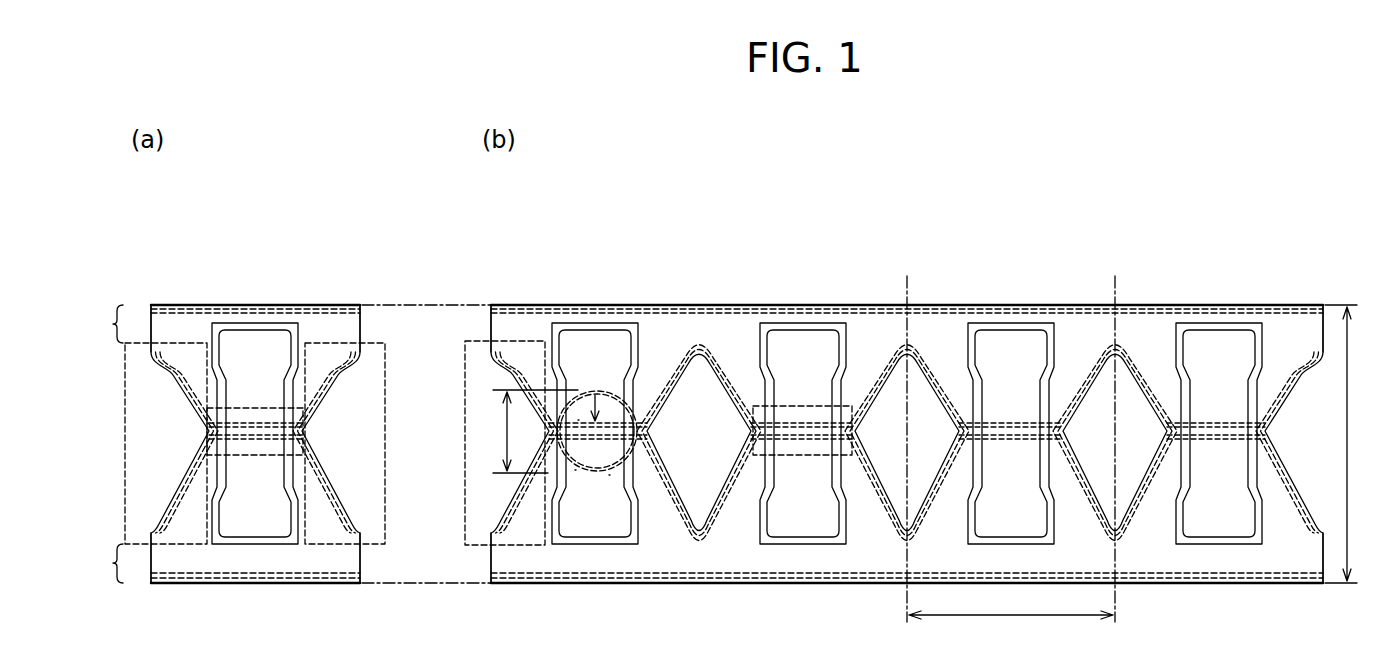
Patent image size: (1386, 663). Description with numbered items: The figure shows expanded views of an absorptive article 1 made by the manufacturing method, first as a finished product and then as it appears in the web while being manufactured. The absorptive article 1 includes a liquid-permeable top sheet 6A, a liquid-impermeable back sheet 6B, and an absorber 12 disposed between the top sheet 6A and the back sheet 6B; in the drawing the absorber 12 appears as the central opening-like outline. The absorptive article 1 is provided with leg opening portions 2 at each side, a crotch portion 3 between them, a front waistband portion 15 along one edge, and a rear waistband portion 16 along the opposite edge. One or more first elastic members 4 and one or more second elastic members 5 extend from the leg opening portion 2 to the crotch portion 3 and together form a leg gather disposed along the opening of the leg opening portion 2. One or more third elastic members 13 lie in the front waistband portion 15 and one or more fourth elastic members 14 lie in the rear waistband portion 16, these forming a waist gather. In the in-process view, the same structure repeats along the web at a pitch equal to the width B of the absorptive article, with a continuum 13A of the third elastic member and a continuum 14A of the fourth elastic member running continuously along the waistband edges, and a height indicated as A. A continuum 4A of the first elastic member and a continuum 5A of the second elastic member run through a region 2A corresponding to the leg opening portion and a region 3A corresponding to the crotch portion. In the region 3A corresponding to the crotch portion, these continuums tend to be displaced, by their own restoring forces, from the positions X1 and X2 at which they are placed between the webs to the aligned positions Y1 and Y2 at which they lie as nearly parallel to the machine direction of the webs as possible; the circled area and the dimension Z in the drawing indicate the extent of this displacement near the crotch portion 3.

In FIG. 1A, the absorptive article 1 is at (155, 258).
In FIG. 1A, the leg opening portion 2 is at (136, 404).
In FIG. 1B, the region corresponding to the leg opening portion 2A is at (468, 460).
In FIG. 1A, the crotch portion 3 is at (255, 456).
In FIG. 1B, the region corresponding to the crotch portion 3A is at (802, 455).
In FIG. 1A, the first elastic member 4 is at (168, 352).
In FIG. 1B, the continuum of the first elastic member 4A is at (690, 345).
In FIG. 1A, the second elastic member 5 is at (165, 512).
In FIG. 1B, the continuum of the second elastic member 5A is at (699, 543).
In FIG. 1A, the top sheet 6A is at (350, 327).
In FIG. 1A, the back sheet 6B is at (241, 562).
In FIG. 1A, the absorber 12 is at (258, 327).
In FIG. 1A, the third elastic member 13 is at (311, 311).
In FIG. 1B, the continuum of the third elastic member 13A is at (723, 323).
In FIG. 1A, the fourth elastic member 14 is at (321, 575).
In FIG. 1B, the continuum of the fourth elastic member 14A is at (577, 583).
In FIG. 1A, the front waistband portion 15 is at (101, 324).
In FIG. 1A, the rear waistband portion 16 is at (101, 563).
In FIG. 1B, the dimension Z is at (562, 431).
In FIG. 1B, the position X1 is at (607, 393).
In FIG. 1B, the position X2 is at (609, 475).
In FIG. 1B, the aligned position Y1 is at (578, 420).
In FIG. 1B, the aligned position Y2 is at (575, 470).
In FIG. 1B, the width A is at (1350, 444).
In FIG. 1B, the width of the absorptive article B is at (1011, 631).